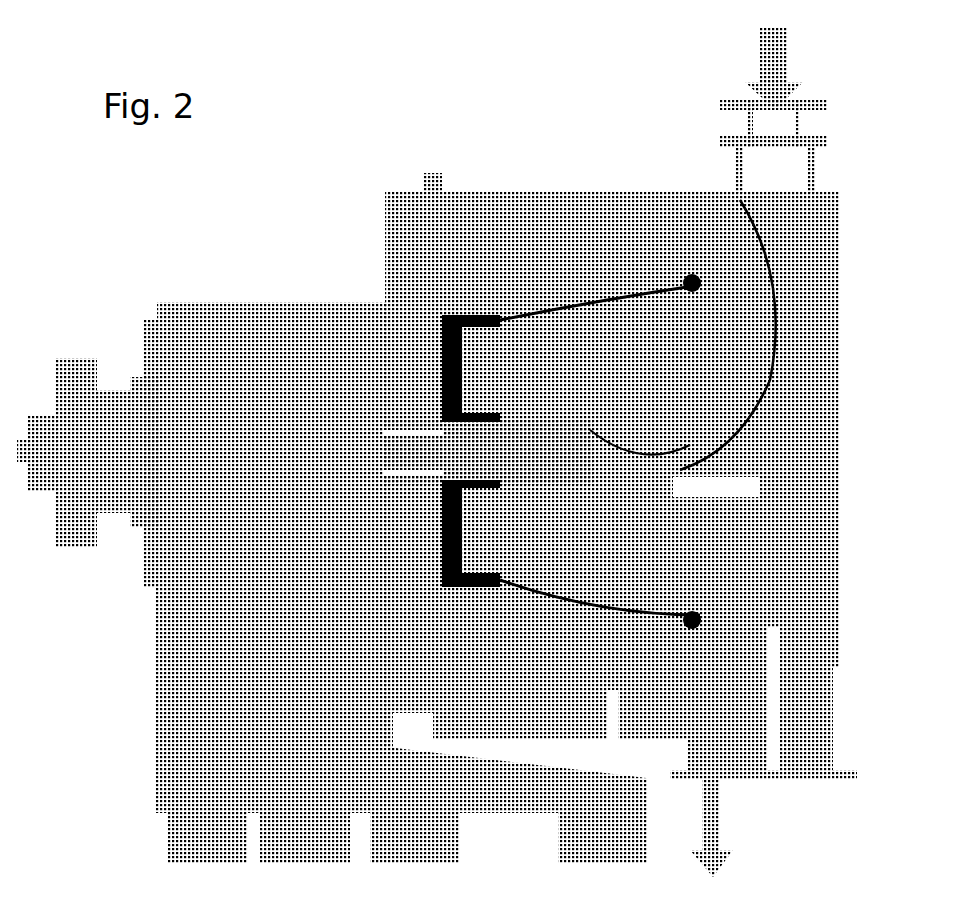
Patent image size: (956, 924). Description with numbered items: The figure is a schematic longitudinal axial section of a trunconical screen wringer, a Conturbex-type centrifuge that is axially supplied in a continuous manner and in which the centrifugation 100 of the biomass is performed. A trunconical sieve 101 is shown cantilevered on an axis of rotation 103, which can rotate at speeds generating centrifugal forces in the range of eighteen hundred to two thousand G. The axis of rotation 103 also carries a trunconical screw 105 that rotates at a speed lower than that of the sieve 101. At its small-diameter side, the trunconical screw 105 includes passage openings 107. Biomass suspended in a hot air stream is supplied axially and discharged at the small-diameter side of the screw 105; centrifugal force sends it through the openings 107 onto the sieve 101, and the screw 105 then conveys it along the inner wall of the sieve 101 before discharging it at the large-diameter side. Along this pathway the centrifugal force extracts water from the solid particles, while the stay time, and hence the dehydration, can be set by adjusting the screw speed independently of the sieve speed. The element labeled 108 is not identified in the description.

The centrifugation 100 is at (552, 170).
The trunconical sieve 101 is at (482, 312).
The axis of rotation 103 is at (433, 450).
The trunconical screw 105 is at (638, 572).
The passage openings 107 is at (452, 322).
The volute casing 108 is at (703, 447).